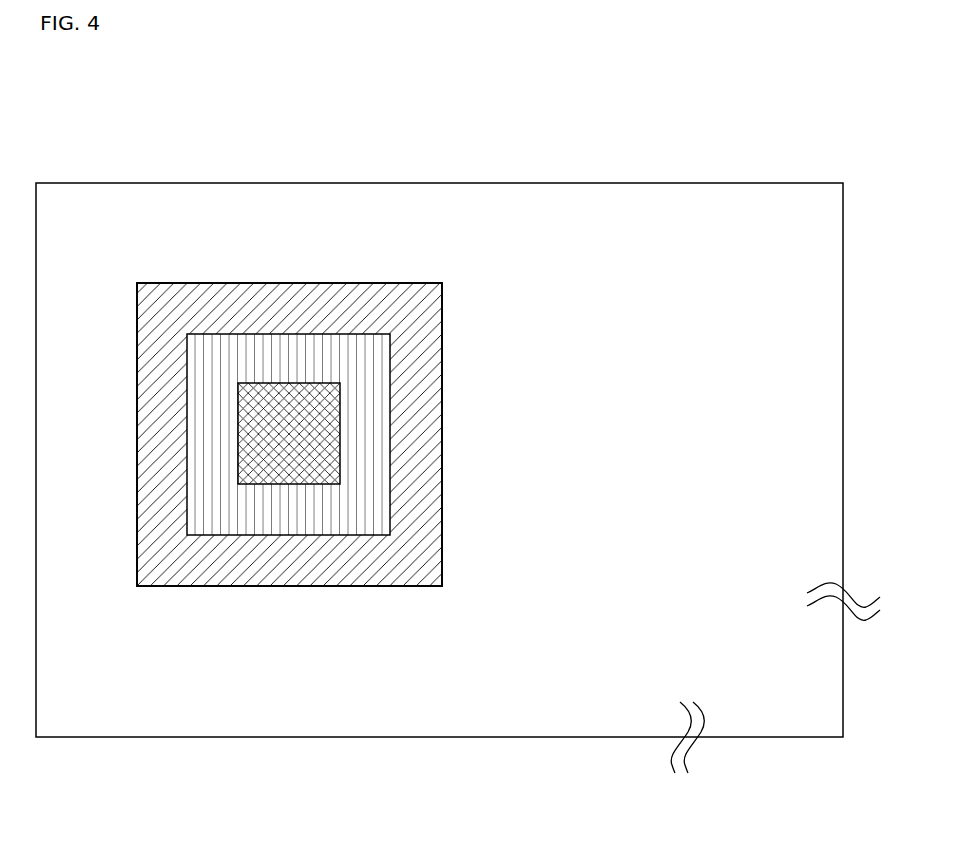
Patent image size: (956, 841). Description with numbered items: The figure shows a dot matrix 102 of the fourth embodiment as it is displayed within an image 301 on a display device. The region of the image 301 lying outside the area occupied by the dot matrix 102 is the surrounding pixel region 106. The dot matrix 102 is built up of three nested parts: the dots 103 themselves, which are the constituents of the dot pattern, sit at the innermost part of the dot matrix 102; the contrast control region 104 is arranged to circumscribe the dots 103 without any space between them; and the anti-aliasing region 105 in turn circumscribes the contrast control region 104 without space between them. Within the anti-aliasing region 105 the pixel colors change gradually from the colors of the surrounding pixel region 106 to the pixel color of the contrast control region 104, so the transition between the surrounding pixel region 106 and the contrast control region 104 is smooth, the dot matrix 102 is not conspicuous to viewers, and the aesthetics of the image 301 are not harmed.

The image 301 is at (69, 181).
The dot matrix 102 is at (187, 281).
The dots 103 is at (290, 437).
The contrast control region 104 is at (363, 460).
The anti-aliasing region 105 is at (410, 358).
The surrounding pixel region 106 is at (388, 663).